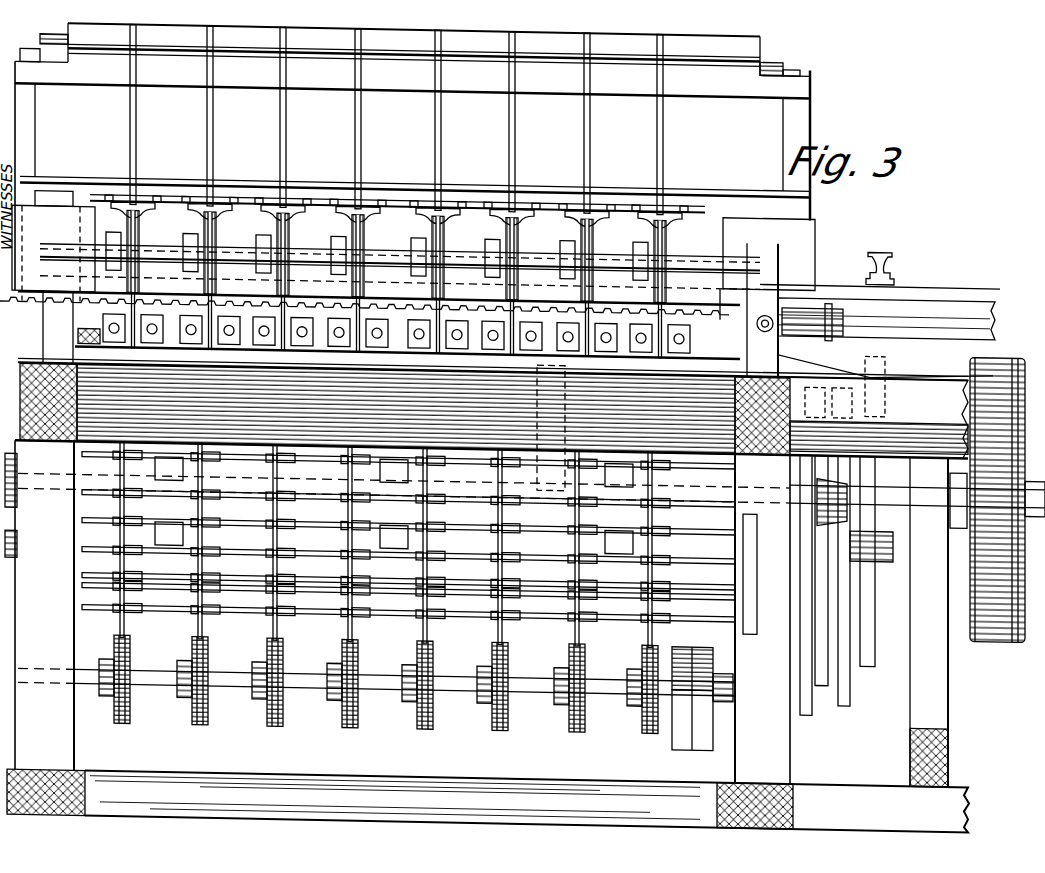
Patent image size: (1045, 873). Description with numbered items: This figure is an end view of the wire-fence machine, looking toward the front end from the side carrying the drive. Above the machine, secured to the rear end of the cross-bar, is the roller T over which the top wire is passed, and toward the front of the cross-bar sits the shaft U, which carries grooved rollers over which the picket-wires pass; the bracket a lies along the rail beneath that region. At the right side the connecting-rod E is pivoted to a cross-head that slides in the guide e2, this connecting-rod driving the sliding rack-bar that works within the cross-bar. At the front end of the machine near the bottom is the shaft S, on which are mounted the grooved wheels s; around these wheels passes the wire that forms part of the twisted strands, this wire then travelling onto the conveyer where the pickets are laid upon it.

The roller T is at (737, 36).
The rail clip a is at (397, 219).
The shaft U is at (720, 252).
The guide e2 is at (950, 268).
The connecting-rod E is at (990, 295).
The grooved wheels s is at (697, 689).
The shaft S is at (376, 587).